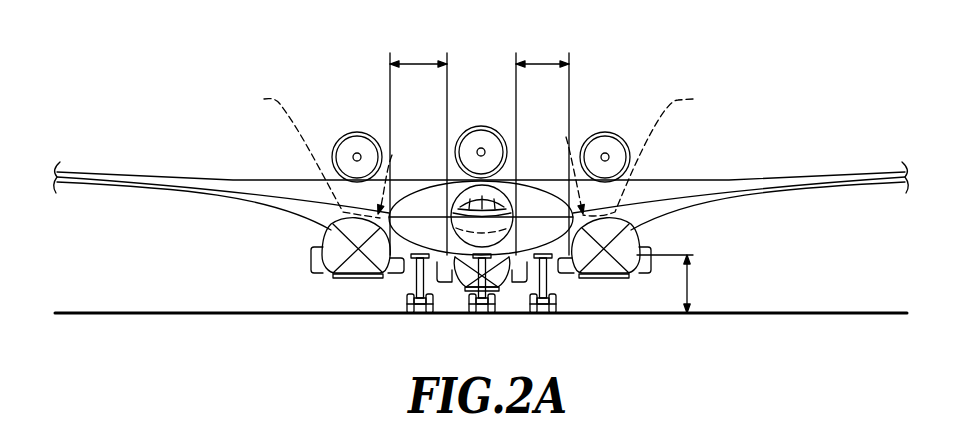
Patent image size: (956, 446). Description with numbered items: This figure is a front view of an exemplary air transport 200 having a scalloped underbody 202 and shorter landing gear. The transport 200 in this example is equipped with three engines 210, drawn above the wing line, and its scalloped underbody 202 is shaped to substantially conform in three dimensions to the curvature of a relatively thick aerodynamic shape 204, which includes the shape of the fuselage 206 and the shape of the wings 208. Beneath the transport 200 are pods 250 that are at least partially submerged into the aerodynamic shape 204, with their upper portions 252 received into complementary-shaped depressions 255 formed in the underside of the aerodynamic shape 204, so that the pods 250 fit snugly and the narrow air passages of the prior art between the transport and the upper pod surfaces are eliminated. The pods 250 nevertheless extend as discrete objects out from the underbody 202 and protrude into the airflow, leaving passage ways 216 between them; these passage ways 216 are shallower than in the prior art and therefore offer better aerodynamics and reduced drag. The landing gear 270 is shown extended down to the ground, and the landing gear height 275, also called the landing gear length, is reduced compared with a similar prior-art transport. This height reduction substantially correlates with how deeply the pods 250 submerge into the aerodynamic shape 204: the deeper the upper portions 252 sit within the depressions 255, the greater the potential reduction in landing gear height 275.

The air transport 200 is at (780, 110).
The scalloped underbody 202 is at (197, 220).
The relatively thick aerodynamic shape 204 is at (233, 176).
The fuselage 206 is at (495, 192).
The wings 208 is at (138, 172).
The engines 210 is at (357, 132).
The passage ways 216 is at (419, 62).
The pods 250 is at (346, 282).
The upper portions of pods 252 is at (478, 151).
The depressions 255 is at (396, 153).
The landing gear 270 is at (410, 281).
The landing gear height 275 is at (689, 283).